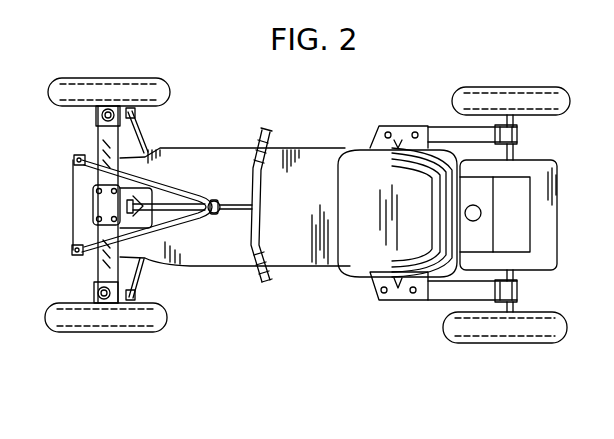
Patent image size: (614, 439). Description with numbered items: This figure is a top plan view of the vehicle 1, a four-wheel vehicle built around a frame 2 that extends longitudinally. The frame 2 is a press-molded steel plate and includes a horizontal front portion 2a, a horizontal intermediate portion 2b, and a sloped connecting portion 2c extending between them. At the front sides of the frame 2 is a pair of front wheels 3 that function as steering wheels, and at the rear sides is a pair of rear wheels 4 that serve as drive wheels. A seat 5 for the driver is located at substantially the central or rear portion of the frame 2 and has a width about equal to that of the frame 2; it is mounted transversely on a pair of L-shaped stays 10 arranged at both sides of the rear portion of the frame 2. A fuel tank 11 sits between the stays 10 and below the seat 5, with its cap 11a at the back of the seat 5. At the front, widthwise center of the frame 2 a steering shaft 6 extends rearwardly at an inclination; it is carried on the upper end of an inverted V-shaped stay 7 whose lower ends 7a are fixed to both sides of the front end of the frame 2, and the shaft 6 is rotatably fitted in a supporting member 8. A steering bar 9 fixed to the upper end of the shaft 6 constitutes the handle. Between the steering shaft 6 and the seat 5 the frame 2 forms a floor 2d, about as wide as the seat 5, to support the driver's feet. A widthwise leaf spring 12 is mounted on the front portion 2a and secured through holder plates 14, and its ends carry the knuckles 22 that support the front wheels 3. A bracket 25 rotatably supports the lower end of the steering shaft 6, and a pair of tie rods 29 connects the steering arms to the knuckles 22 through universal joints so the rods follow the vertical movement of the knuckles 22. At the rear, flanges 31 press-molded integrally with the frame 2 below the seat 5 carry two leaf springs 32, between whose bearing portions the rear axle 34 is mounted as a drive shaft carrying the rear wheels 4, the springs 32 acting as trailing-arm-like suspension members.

The vehicle 1 is at (221, 132).
The frame 2 is at (308, 230).
The horizontal front portion 2a is at (82, 213).
The horizontal intermediate portion 2b is at (240, 264).
The sloped connecting portion 2c is at (177, 264).
The floor 2d is at (313, 166).
The front wheel 3 is at (147, 90).
The rear wheel 4 is at (560, 103).
The seat 5 is at (370, 264).
The steering shaft 6 is at (237, 207).
The inverted V-shaped stay 7 is at (170, 187).
The lower end of stay 7a is at (88, 157).
The supporting member 8 is at (217, 220).
The steering bar 9 is at (257, 228).
The L-shaped stay 10 is at (480, 175).
The fuel tank 11 is at (488, 204).
The cap 11a is at (481, 218).
The leaf spring 12 is at (107, 131).
The holder plate 14 is at (92, 197).
The knuckle 22 is at (127, 111).
The bracket 25 is at (74, 248).
The tie rod 29 is at (144, 141).
The flange 31 is at (409, 127).
The leaf spring 32 is at (470, 136).
The rear axle 34 is at (516, 277).